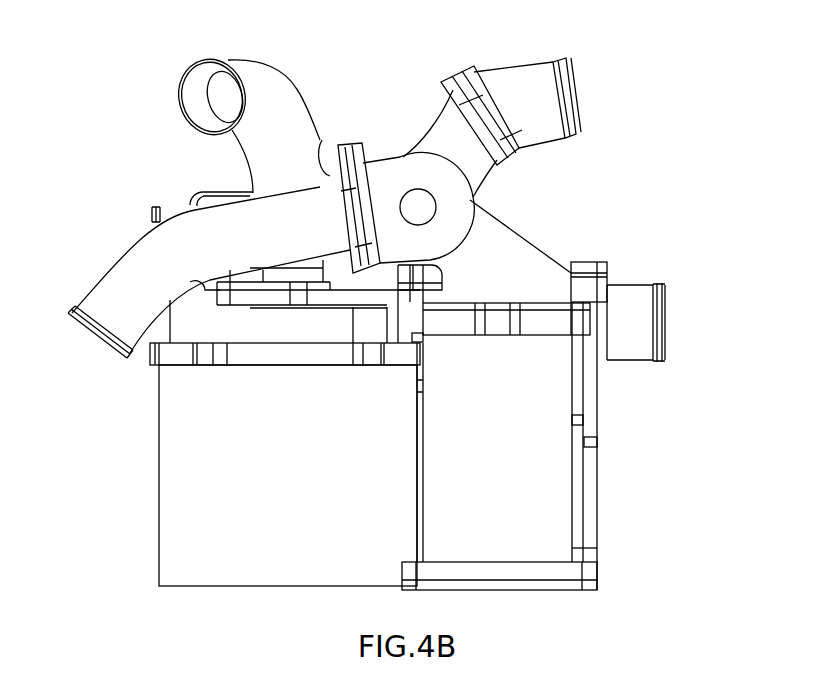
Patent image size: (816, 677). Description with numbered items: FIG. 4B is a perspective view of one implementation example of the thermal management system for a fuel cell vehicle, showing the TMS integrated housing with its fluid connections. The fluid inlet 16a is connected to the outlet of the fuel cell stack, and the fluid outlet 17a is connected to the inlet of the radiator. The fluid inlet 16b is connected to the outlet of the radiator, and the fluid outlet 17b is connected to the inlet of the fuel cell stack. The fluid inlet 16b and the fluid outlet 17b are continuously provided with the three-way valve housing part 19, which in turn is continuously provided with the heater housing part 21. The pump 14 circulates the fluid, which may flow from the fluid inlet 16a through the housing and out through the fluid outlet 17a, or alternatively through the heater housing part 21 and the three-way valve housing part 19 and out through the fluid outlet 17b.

The pump 14 is at (184, 484).
The fluid inlet 16a is at (290, 108).
The fluid inlet 16b is at (543, 105).
The fluid outlet 17a is at (645, 323).
The fluid outlet 17b is at (118, 268).
The 3-way valve housing part 19 is at (448, 223).
The heater housing part 21 is at (532, 497).